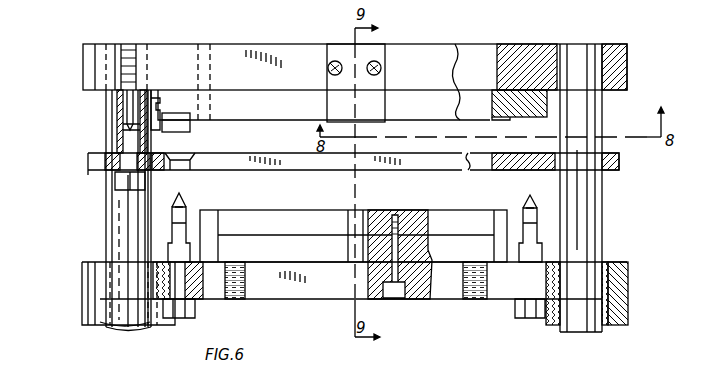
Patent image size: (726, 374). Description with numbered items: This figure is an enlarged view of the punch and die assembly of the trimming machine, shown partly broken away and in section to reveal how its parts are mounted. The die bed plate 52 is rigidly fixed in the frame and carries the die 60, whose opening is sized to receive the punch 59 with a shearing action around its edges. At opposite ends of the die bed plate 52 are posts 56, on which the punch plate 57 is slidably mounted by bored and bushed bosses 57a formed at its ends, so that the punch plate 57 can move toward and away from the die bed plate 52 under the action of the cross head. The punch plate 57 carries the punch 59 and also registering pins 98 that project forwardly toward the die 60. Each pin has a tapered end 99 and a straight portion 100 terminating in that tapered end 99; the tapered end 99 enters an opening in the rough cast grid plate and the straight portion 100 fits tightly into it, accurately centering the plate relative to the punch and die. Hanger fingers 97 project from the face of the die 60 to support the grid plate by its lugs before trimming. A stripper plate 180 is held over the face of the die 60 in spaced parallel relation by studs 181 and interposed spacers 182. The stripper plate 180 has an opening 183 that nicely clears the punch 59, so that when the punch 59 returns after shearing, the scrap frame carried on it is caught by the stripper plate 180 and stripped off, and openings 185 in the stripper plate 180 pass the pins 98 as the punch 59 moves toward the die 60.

The die bed plate 52 is at (82, 60).
The spacers 182 is at (128, 100).
The hanger fingers 97 is at (122, 126).
The studs 181 is at (110, 147).
The stripper plate 180 is at (88, 172).
The openings 185 is at (175, 170).
The posts 56 is at (106, 222).
The bosses 57a is at (82, 300).
The punch plate 57 is at (292, 300).
The registering pins 98 is at (180, 229).
The tapered ends 99 is at (181, 196).
The straight portions 100 is at (180, 210).
The punch 59 is at (318, 196).
The die 60 is at (287, 110).
The opening 183 is at (487, 164).